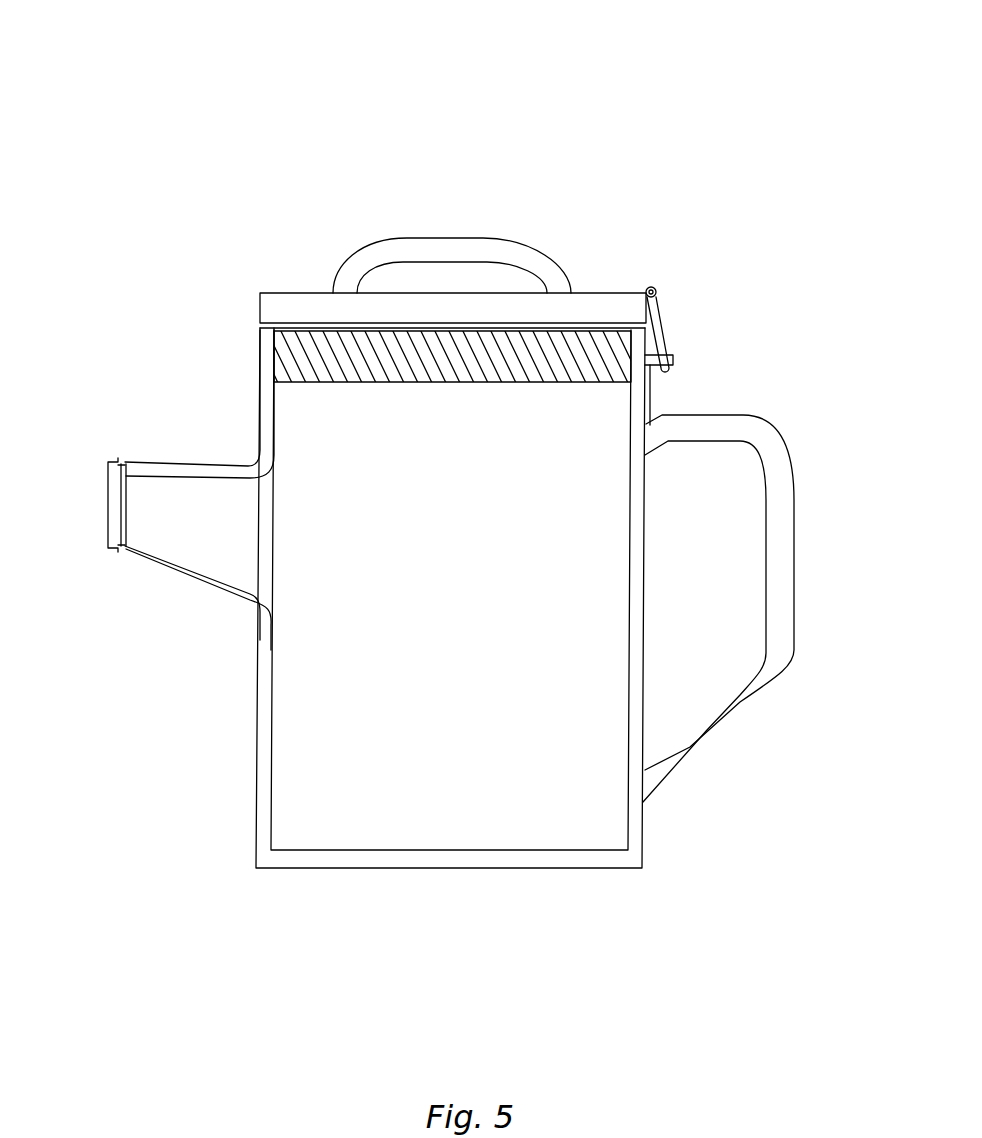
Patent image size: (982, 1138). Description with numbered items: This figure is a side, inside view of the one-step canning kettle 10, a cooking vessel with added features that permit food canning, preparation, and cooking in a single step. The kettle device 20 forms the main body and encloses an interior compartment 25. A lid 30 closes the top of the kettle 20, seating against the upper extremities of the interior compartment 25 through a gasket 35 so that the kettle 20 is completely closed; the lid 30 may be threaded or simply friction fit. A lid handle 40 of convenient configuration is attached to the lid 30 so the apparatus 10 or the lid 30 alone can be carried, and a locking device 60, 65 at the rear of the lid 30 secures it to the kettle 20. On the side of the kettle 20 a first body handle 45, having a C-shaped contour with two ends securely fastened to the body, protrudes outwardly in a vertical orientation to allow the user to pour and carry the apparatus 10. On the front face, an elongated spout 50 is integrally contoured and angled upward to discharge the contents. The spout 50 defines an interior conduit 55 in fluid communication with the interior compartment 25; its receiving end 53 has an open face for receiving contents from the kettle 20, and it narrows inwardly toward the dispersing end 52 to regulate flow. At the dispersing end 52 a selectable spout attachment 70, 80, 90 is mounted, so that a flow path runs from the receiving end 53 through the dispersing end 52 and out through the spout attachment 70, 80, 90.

The one-step canning kettle 10 is at (786, 138).
The kettle device 20 is at (635, 420).
The interior compartment 25 is at (592, 838).
The lid 30 is at (292, 309).
The gasket 35 is at (500, 345).
The lid handle 40 is at (400, 248).
The first body handle 45 is at (722, 730).
The spout 50 is at (172, 462).
The dispersing end 52 is at (116, 548).
The receiving end 53 is at (268, 533).
The conduit 55 is at (213, 518).
The locking device 60 is at (656, 290).
The locking device 65 is at (673, 357).
The spout attachment 70 is at (112, 488).
The spout attachment 80 is at (108, 508).
The spout attachment 90 is at (112, 520).